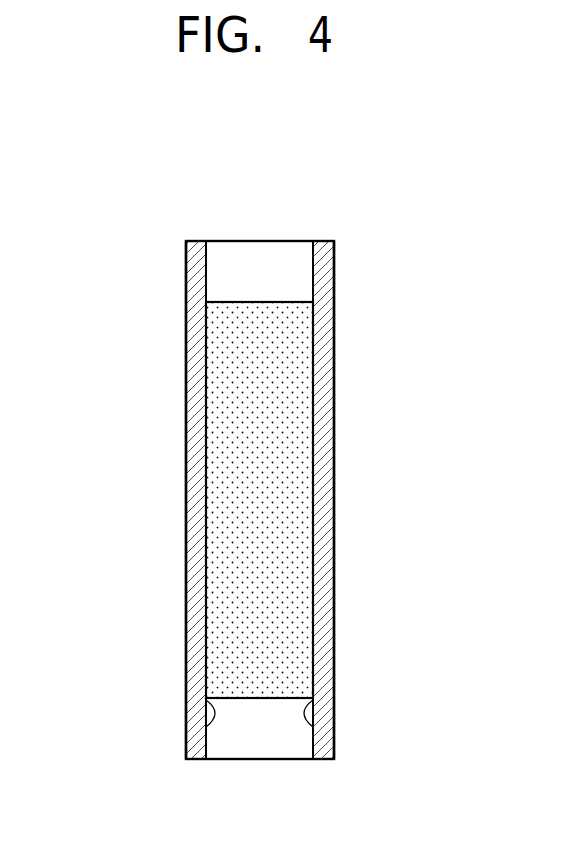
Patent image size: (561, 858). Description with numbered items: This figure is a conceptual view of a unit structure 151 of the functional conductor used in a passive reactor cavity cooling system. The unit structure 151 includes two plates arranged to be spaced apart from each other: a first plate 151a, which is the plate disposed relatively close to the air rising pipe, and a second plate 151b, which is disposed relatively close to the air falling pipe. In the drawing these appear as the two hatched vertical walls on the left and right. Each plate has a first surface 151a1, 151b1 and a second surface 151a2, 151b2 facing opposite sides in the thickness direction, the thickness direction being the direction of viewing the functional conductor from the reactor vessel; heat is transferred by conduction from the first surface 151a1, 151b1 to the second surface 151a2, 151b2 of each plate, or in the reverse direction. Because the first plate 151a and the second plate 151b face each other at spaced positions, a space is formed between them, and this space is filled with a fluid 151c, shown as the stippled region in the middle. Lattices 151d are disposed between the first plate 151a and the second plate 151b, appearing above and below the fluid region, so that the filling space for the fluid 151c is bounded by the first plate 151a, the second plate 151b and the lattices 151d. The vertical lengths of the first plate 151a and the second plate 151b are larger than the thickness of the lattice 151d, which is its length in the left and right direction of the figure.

The unit structure 151 is at (128, 228).
The first plate 151a is at (196, 463).
The second plate 151b is at (328, 465).
The fluid 151c is at (300, 572).
The lattices 151d is at (260, 248).
The first surface 151a1 is at (186, 735).
The second surface 151a2 is at (206, 700).
The first surface 151b1 is at (334, 735).
The second surface 151b2 is at (313, 700).